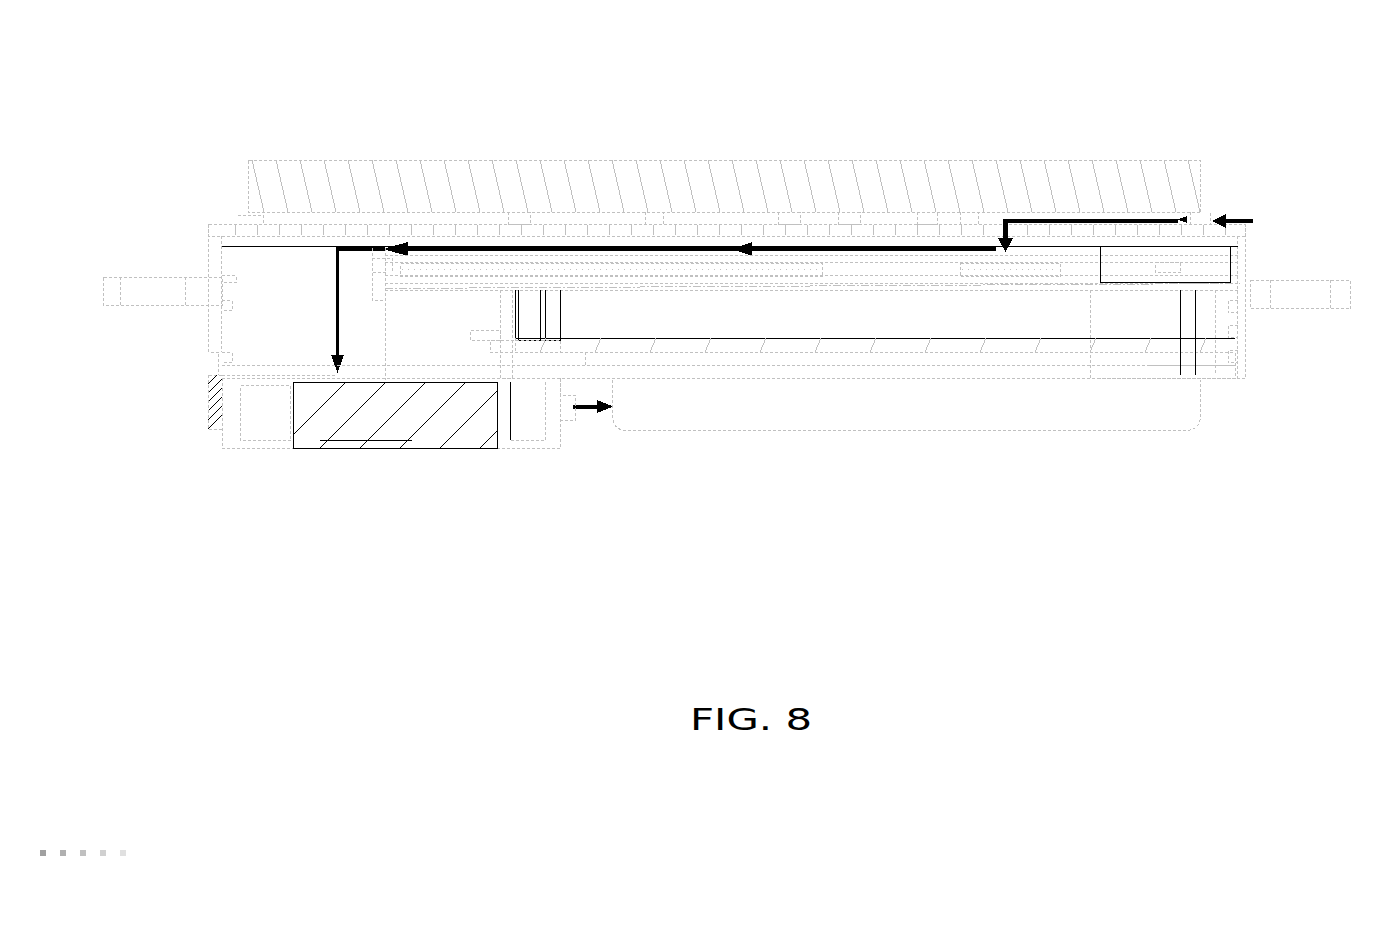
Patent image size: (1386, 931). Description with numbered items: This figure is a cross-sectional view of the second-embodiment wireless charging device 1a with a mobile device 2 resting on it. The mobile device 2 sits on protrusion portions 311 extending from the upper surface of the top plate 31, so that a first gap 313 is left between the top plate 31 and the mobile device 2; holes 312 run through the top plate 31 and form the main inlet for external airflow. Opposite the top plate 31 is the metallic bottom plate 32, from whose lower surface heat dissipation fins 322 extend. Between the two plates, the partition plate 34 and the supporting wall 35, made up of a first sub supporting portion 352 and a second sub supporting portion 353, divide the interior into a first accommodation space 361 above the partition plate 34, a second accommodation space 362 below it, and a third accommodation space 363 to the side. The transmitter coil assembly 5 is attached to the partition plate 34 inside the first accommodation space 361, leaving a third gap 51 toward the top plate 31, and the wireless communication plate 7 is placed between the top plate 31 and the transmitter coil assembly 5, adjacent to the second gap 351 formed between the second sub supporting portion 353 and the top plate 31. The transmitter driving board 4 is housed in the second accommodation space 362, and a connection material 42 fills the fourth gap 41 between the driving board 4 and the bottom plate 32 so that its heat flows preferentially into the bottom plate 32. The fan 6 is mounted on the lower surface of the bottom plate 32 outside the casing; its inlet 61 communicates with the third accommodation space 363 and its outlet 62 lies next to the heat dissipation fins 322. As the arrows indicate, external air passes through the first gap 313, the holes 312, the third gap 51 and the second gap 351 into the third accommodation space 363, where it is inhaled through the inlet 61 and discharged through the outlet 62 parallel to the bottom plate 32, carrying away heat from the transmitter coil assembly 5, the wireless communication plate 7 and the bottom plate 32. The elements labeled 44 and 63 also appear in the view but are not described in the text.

The wireless charging device 1a is at (187, 214).
The mobile device 2 is at (1128, 222).
The transmitter driving board 4 is at (1085, 400).
The transmitter coil assembly 5 is at (787, 240).
The fan 6 is at (345, 412).
The wireless communication plate 7 is at (542, 254).
The top plate 31 is at (1250, 229).
The bottom plate 32 is at (1214, 372).
The partition plate 34 is at (1070, 340).
The supporting wall 35 is at (548, 565).
The fourth gap 41 is at (1165, 370).
The connection material 42 is at (890, 356).
The handle 44 is at (1215, 312).
The third gap 51 is at (712, 246).
The inlet 61 is at (320, 372).
The outlet 62 is at (575, 415).
The motor mount 63 is at (258, 428).
The protrusion portions 311 is at (872, 240).
The holes 312 is at (972, 232).
The first gap 313 is at (1190, 221).
The heat dissipation fins 322 is at (1015, 402).
The second gap 351 is at (372, 246).
The first sub supporting portion 352 is at (505, 360).
The second sub supporting portion 353 is at (380, 390).
The first accommodation space 361 is at (1105, 273).
The second accommodation space 362 is at (817, 322).
The third accommodation space 363 is at (300, 270).